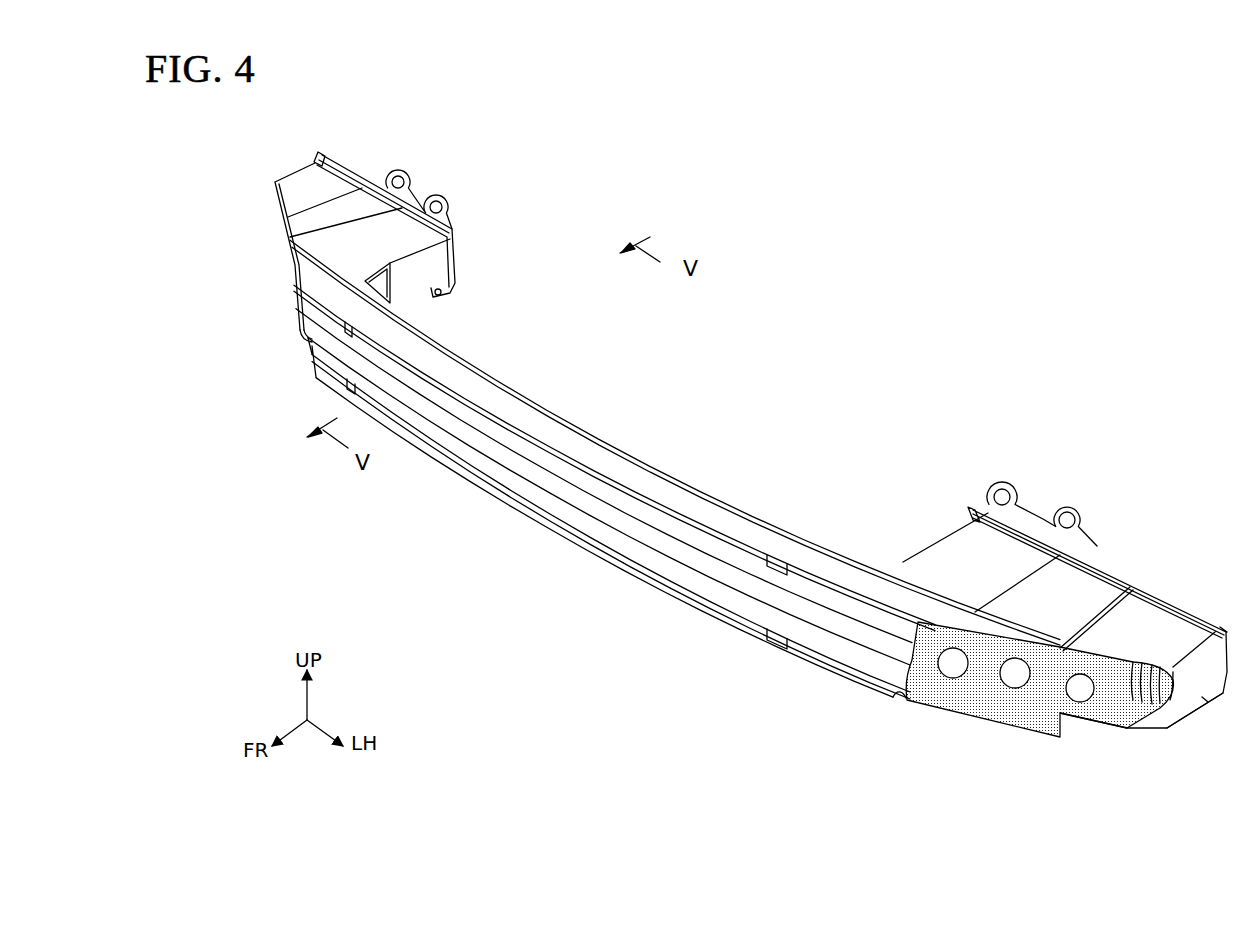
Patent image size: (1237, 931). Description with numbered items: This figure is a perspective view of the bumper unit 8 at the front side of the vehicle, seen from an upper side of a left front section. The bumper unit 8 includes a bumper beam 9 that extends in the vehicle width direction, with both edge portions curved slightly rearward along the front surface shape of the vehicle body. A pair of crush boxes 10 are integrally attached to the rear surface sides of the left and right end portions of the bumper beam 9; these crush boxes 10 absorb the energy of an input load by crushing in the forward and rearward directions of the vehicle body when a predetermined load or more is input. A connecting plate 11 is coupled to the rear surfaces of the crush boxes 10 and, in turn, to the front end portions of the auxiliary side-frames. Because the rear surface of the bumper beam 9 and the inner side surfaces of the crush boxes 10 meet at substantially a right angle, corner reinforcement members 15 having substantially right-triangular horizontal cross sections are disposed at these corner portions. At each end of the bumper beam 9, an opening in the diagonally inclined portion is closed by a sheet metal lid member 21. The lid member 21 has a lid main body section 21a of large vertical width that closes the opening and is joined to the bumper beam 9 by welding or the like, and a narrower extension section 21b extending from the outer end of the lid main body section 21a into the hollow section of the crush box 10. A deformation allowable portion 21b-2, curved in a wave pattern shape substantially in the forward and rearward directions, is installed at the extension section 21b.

The bumper unit 8 is at (914, 390).
The bumper beam 9 is at (812, 656).
The crush box 10 is at (1083, 586).
The connecting plate 11 is at (406, 194).
The corner reinforcement member 15 is at (398, 291).
The lid member 21 is at (285, 263).
The lid main body section 21a is at (959, 691).
The extension section 21b is at (1108, 718).
The deformation allowable portion 21b-2 is at (1150, 690).